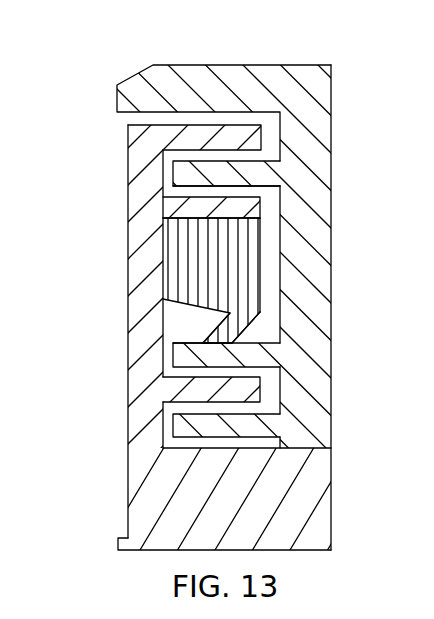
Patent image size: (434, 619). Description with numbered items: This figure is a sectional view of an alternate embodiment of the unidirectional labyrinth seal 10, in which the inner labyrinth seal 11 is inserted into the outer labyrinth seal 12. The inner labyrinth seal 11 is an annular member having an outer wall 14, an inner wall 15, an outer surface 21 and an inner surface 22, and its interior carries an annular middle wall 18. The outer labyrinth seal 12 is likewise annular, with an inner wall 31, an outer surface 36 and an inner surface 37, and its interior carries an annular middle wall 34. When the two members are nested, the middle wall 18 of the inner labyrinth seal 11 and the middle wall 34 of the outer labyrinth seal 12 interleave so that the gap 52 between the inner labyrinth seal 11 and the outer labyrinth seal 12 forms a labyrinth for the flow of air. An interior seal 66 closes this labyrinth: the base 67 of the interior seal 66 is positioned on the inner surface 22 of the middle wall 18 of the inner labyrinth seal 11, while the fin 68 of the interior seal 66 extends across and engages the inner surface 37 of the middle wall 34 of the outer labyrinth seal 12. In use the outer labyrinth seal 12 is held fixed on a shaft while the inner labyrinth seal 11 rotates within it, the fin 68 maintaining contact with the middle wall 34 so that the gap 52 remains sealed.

The unidirectional labyrinth seal 10 is at (97, 278).
The inner labyrinth seal 11 is at (122, 122).
The outer labyrinth seal 12 is at (335, 63).
The outer wall 14 is at (190, 146).
The inner wall 15 is at (272, 515).
The middle wall 18 is at (240, 207).
The outer surface 21 is at (122, 315).
The inner surface 22 is at (153, 360).
The inner wall 31 is at (215, 423).
The middle wall 34 is at (215, 172).
The outer surface 36 is at (340, 129).
The inner surface 37 is at (199, 349).
The gap 52 is at (252, 187).
The interior seal 66 is at (222, 254).
The base 67 is at (193, 232).
The fin 68 is at (229, 327).